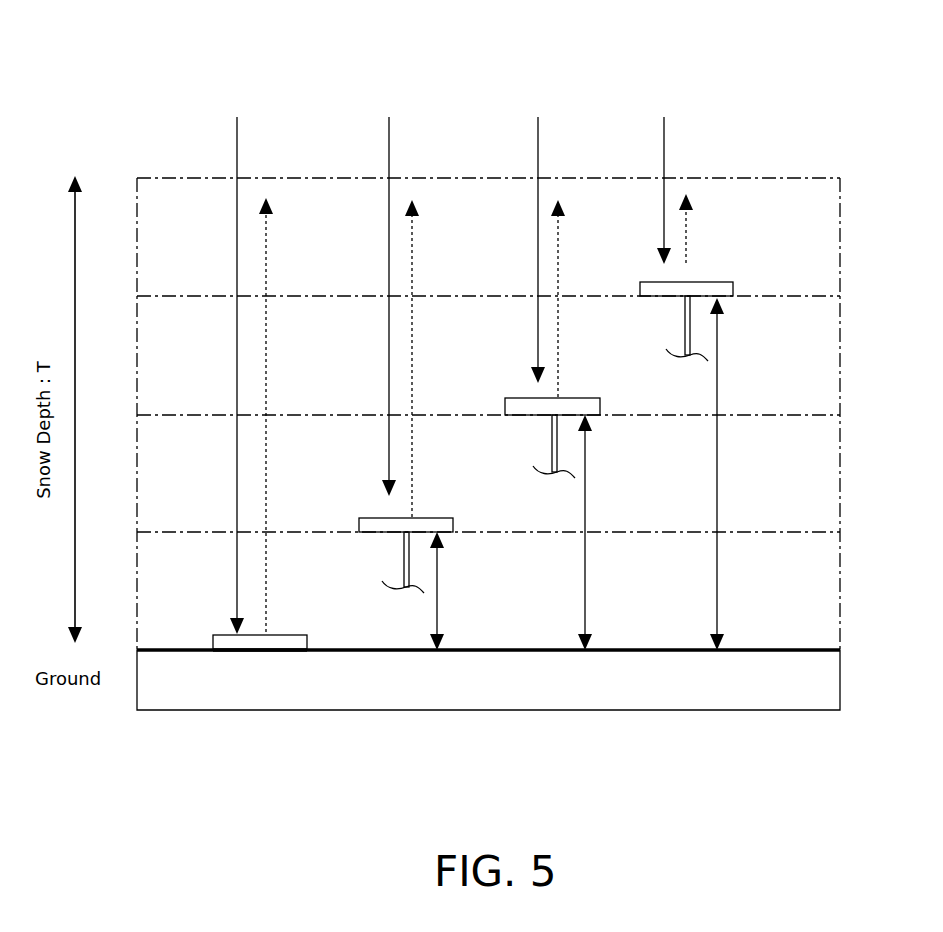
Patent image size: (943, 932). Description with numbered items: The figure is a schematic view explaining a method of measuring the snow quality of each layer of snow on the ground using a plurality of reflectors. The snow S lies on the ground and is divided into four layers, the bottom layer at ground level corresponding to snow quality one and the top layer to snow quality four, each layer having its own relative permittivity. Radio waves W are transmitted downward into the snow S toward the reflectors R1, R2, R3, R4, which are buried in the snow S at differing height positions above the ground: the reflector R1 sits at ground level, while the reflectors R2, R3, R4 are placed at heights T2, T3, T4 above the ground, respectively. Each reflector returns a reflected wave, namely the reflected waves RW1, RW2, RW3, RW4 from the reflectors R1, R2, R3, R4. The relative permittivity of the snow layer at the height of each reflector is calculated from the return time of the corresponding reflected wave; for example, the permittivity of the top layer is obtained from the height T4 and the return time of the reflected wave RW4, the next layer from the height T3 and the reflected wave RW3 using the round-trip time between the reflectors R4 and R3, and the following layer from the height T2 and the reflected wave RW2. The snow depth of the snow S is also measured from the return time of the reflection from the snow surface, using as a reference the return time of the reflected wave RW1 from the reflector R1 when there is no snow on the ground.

The snow S is at (808, 178).
The radio waves W is at (218, 101).
The reflected wave from reflector R1 RW1 is at (294, 411).
The reflected wave from reflector R2 RW2 is at (436, 354).
The reflected wave from reflector R3 RW3 is at (582, 294).
The reflected wave from reflector R4 RW4 is at (710, 227).
The reflector R1 is at (264, 625).
The reflector R2 is at (408, 531).
The reflector R3 is at (556, 415).
The reflector R4 is at (700, 298).
The height of reflector R2 T2 is at (454, 591).
The height of reflector R3 T3 is at (600, 532).
The height of reflector R4 T4 is at (735, 474).